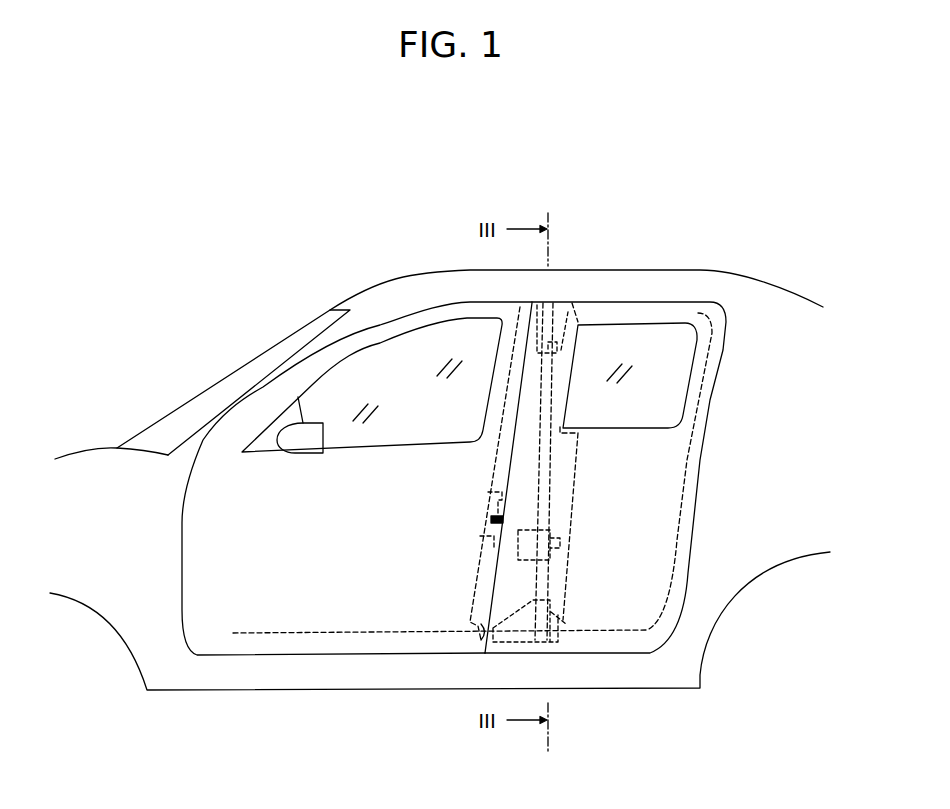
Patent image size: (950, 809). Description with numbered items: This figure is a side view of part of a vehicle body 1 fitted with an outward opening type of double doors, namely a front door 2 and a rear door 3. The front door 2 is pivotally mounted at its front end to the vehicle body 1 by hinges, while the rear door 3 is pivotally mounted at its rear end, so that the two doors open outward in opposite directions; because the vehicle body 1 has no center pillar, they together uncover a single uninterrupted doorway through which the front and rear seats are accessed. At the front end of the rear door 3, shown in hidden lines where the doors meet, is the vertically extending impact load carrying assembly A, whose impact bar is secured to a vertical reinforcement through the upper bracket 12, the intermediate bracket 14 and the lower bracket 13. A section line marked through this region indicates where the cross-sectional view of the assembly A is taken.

The vehicle body 1 is at (238, 356).
The front door 2 is at (303, 603).
The rear door 3 is at (613, 605).
The upper bracket 12 is at (568, 312).
The lower bracket 13 is at (570, 630).
The intermediate bracket 14 is at (563, 540).
The impact load carrying assembly A is at (557, 462).